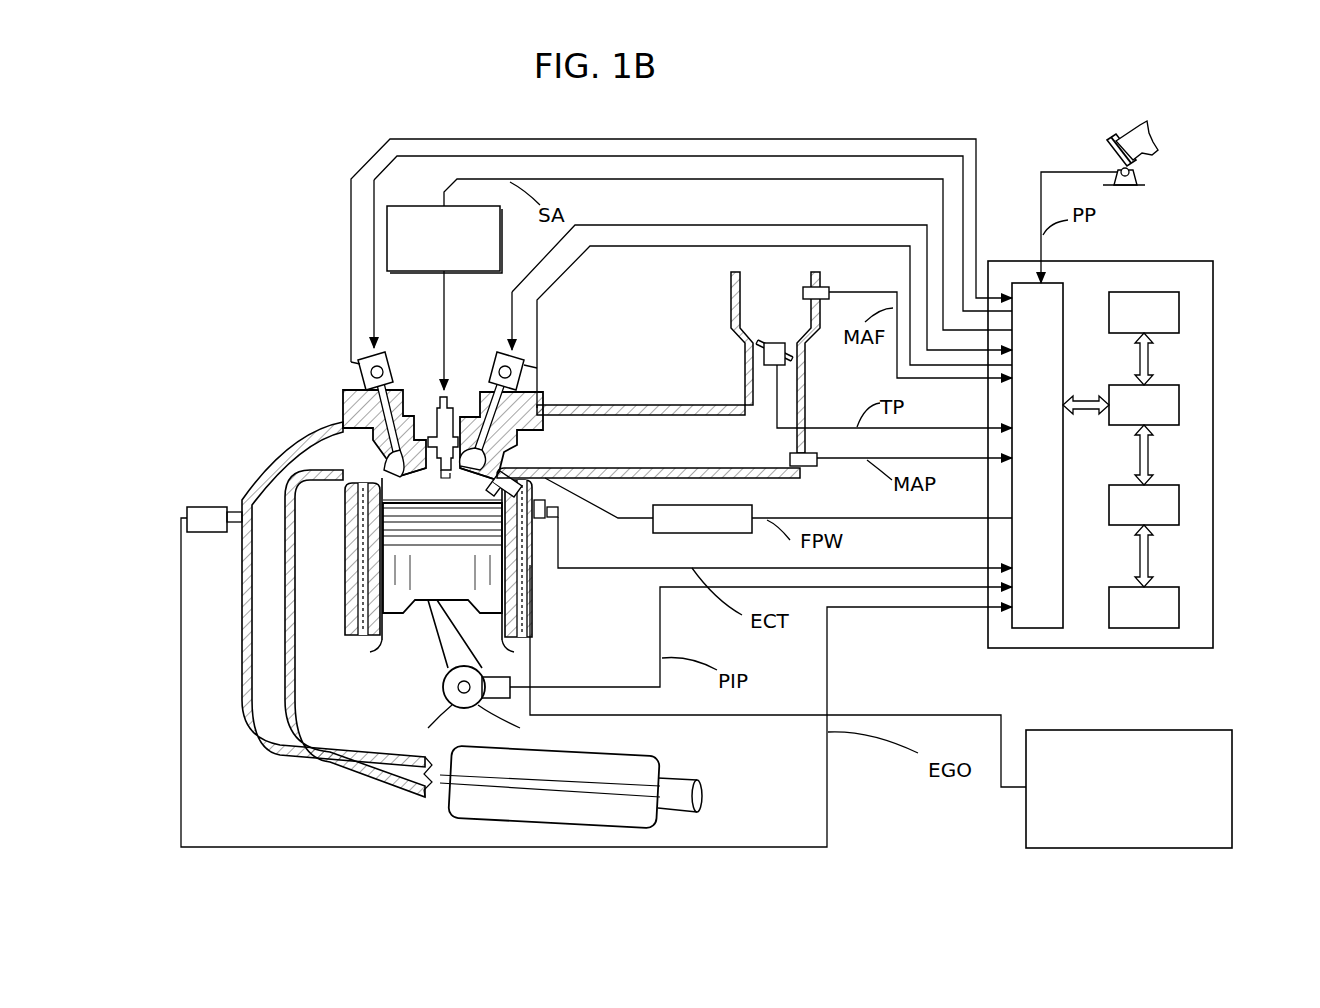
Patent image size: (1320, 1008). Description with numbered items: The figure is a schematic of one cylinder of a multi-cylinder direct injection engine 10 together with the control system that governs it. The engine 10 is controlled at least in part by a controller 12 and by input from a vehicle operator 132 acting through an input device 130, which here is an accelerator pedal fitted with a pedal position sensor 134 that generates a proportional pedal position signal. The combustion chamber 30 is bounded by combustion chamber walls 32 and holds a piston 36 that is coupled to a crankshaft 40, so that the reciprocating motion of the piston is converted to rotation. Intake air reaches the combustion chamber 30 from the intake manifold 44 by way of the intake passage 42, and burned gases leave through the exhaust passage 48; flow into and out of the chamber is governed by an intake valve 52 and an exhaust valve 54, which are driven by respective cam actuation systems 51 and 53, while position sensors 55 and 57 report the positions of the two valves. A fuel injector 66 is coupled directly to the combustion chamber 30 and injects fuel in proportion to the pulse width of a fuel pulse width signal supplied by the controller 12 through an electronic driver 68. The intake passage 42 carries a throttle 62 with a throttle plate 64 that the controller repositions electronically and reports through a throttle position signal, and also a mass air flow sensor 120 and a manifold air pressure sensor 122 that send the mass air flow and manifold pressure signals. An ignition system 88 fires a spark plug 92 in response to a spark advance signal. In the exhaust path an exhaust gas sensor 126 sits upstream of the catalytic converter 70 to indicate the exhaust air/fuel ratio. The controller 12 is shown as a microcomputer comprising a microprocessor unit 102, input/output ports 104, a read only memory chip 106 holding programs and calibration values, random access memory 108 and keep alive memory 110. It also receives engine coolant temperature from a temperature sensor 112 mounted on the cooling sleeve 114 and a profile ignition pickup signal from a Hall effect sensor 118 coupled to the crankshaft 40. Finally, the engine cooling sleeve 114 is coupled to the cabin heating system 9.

The cabin heating system 9 is at (1130, 730).
The engine 10 is at (278, 340).
The controller 12 is at (1205, 258).
The combustion chamber 30 is at (440, 487).
The combustion chamber walls 32 is at (387, 620).
The piston 36 is at (425, 587).
The crankshaft 40 is at (450, 708).
The intake passage 42 is at (775, 362).
The intake manifold 44 is at (648, 441).
The exhaust passage 48 is at (337, 609).
The cam actuation system 51 is at (495, 352).
The intake valve 52 is at (495, 453).
The cam actuation system 53 is at (390, 352).
The exhaust valve 54 is at (390, 453).
The position sensor 55 is at (522, 380).
The position sensor 57 is at (367, 380).
The throttle 62 is at (790, 355).
The throttle plate 64 is at (764, 350).
The fuel injector 66 is at (547, 488).
The electronic driver 68 is at (680, 535).
The catalytic converter 70 is at (620, 755).
The ignition system 88 is at (400, 206).
The spark plug 92 is at (450, 397).
The microprocessor unit 102 is at (1180, 396).
The input/output ports 104 is at (1065, 295).
The read only memory chip 106 is at (1180, 312).
The random access memory 108 is at (1180, 497).
The keep alive memory 110 is at (1180, 598).
The temperature sensor 112 is at (558, 518).
The cooling sleeve 114 is at (535, 590).
The Hall effect sensor 118 is at (500, 702).
The mass air flow sensor 120 is at (820, 288).
The manifold air pressure sensor 122 is at (810, 467).
The exhaust gas sensor 126 is at (187, 508).
The input device 130 is at (1108, 148).
The vehicle operator 132 is at (1150, 133).
The pedal position sensor 134 is at (1137, 173).